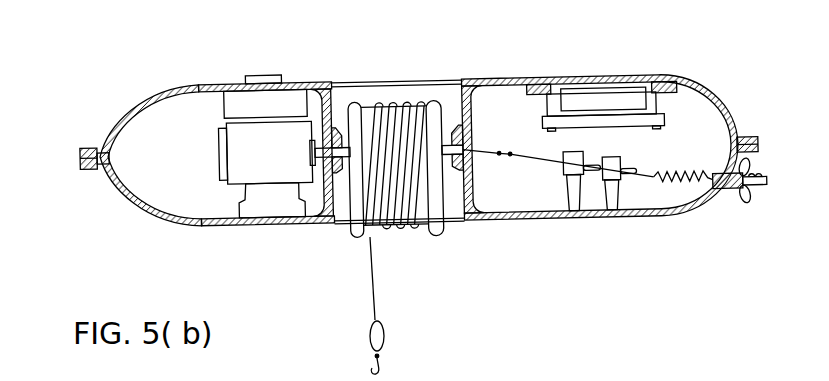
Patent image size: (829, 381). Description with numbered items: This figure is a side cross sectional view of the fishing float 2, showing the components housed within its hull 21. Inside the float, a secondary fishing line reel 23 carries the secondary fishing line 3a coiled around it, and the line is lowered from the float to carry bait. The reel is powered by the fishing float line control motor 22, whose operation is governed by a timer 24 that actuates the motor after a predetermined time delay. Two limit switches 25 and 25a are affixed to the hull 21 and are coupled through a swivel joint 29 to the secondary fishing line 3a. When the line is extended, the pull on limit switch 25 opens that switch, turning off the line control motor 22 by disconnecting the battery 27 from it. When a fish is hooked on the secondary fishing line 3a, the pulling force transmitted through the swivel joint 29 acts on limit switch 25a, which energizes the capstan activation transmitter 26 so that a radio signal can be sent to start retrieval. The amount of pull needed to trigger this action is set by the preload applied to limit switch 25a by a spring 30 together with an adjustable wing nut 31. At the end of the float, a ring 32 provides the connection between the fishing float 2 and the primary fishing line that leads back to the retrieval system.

The fishing float 2 is at (446, 70).
The hull 21 is at (140, 185).
The fishing float line control motor 22 is at (267, 209).
The secondary fishing line reel 23 is at (396, 138).
The timer 24 is at (264, 78).
The limit switch 25 is at (569, 212).
The limit switch 25a is at (620, 214).
The capstan activation transmitter 26 is at (603, 78).
The battery 27 is at (603, 68).
The swivel joint 29 is at (558, 210).
The spring 30 is at (683, 219).
The adjustable wing nut 31 is at (739, 218).
The ring 32 is at (756, 112).
The secondary fishing line 3a is at (346, 305).